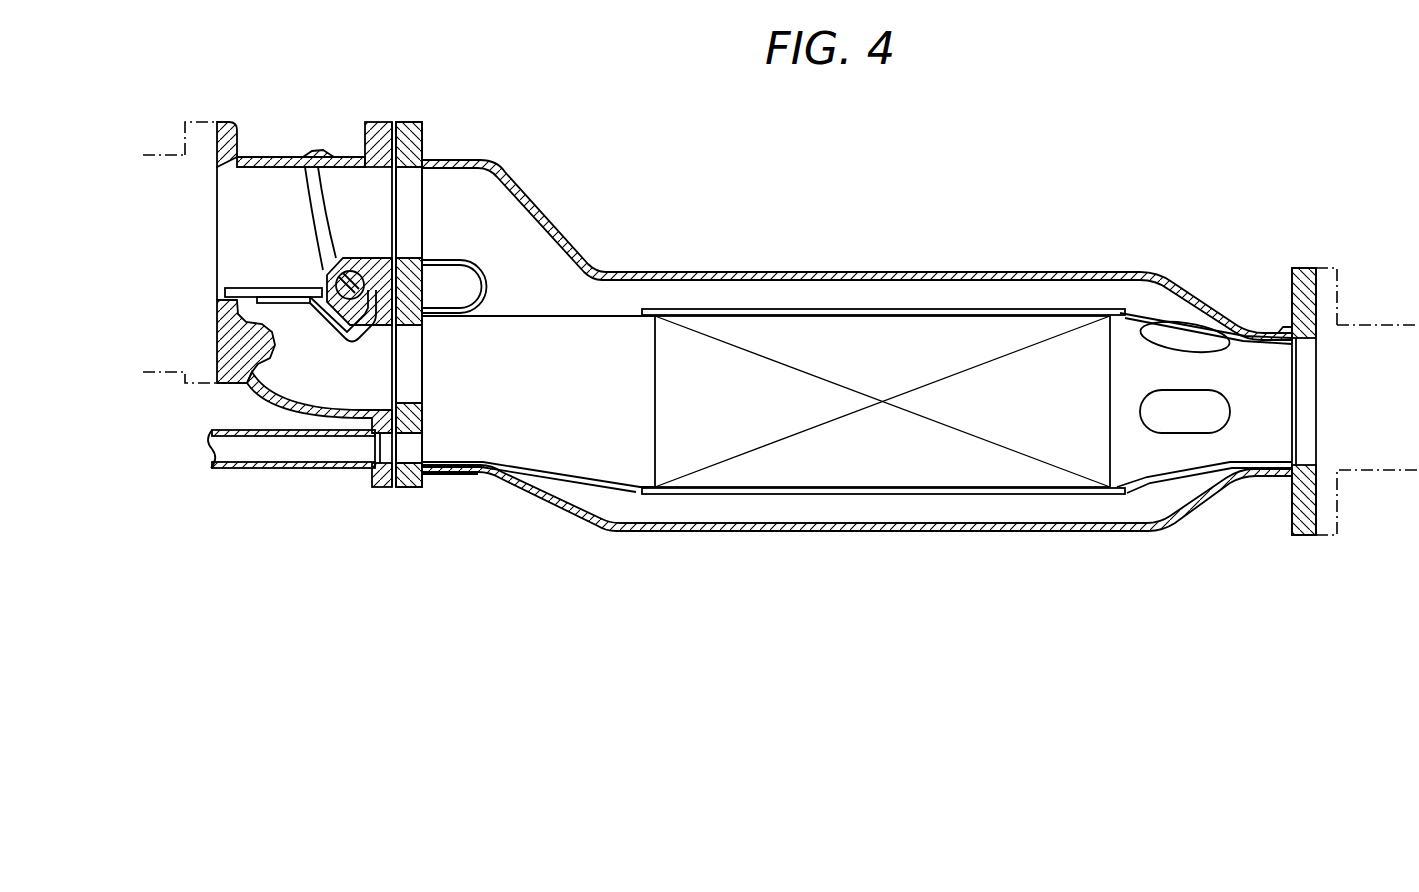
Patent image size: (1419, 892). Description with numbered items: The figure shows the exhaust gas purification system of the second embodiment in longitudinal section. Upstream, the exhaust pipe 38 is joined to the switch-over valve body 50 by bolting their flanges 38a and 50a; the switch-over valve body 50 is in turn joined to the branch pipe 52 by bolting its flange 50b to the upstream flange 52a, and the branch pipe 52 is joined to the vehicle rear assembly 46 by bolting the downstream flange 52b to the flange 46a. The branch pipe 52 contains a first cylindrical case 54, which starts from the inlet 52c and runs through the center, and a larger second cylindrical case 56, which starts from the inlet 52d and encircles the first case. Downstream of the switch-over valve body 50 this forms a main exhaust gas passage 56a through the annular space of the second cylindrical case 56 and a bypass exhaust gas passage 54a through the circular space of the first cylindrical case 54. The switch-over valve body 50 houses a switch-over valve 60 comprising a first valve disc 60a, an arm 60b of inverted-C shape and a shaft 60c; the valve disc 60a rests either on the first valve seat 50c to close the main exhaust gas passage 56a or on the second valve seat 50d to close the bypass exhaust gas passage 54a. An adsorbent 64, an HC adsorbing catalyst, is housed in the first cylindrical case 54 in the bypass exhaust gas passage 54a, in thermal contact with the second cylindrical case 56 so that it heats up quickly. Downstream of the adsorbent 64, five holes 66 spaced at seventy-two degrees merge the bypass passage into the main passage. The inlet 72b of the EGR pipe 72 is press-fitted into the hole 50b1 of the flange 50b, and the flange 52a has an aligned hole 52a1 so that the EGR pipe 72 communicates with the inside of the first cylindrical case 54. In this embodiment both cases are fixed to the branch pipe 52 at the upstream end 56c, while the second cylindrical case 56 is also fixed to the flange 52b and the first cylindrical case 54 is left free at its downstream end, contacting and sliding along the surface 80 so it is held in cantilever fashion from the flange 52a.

The exhaust pipe 38 is at (150, 150).
The flange 38a is at (192, 118).
The vehicle rear assembly 46 is at (1357, 325).
The flange 46a is at (1328, 265).
The switch-over valve body 50 is at (262, 296).
The flange 50a is at (226, 120).
The flange 50b is at (376, 120).
The hole 50b1 is at (379, 488).
The first valve seat 50c is at (303, 168).
The second valve seat 50d is at (226, 291).
The branch pipe 52 is at (856, 293).
The flange 52a is at (458, 293).
The hole 52a1 is at (413, 447).
The flange 52b is at (1295, 268).
The inlet 52c is at (414, 385).
The inlet 52d is at (410, 227).
The first cylindrical case 54 is at (857, 437).
The bypass exhaust gas passage 54a is at (568, 397).
The second cylindrical case 56 is at (857, 350).
The main exhaust gas passage 56a is at (561, 282).
The upstream end 56c is at (453, 474).
The switch-over valve 60 is at (264, 278).
The first valve disc 60a is at (287, 290).
The arm 60b is at (326, 328).
The shaft 60c is at (332, 274).
The adsorbent 64 is at (789, 412).
The holes 66 is at (1173, 475).
The EGR pipe 72 is at (291, 481).
The inlet 72b is at (378, 443).
The surface 80 is at (1268, 330).